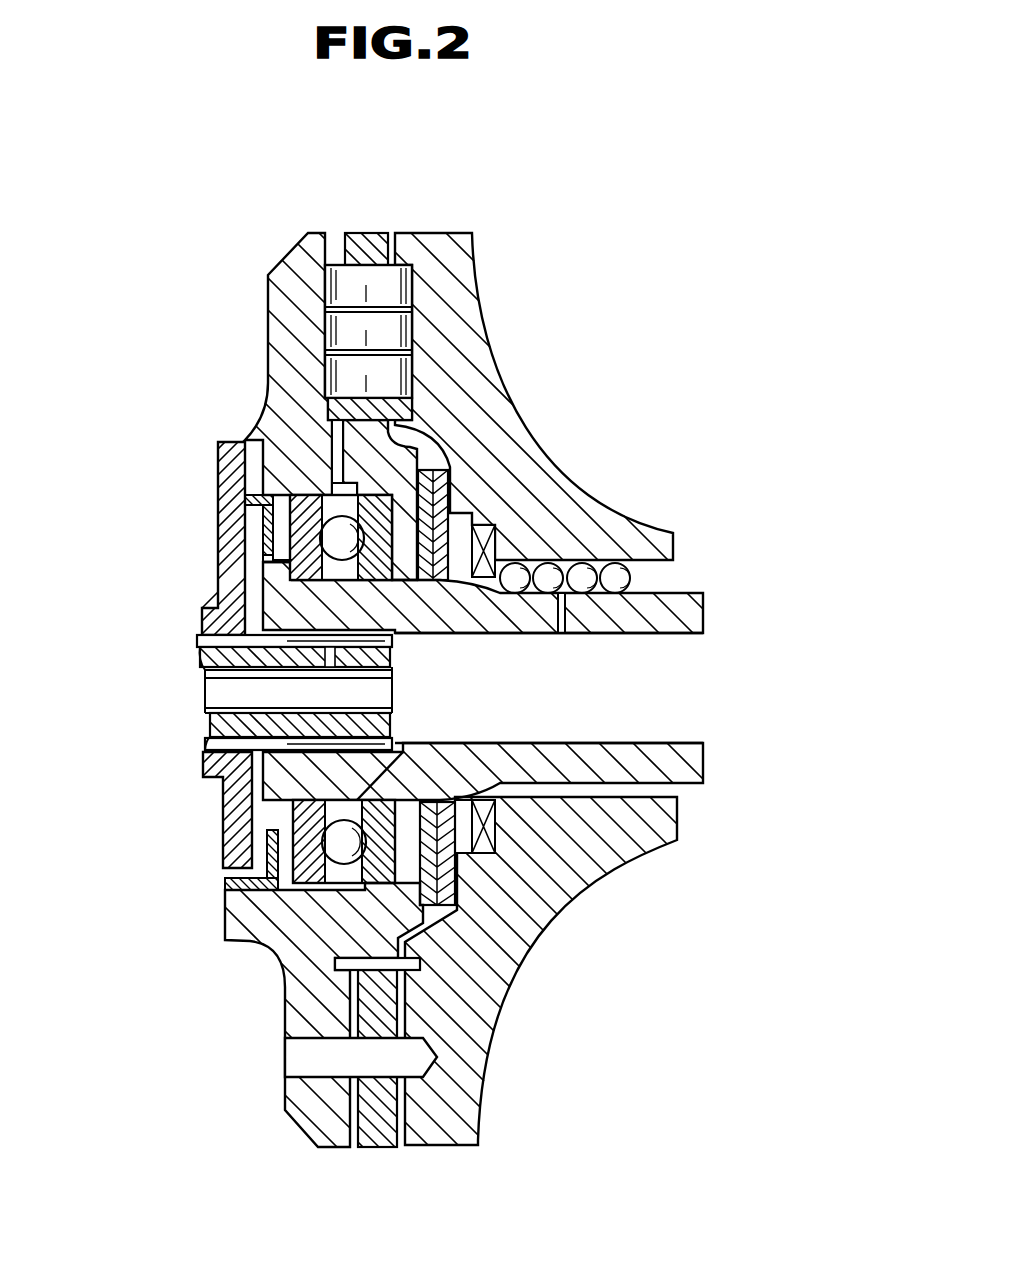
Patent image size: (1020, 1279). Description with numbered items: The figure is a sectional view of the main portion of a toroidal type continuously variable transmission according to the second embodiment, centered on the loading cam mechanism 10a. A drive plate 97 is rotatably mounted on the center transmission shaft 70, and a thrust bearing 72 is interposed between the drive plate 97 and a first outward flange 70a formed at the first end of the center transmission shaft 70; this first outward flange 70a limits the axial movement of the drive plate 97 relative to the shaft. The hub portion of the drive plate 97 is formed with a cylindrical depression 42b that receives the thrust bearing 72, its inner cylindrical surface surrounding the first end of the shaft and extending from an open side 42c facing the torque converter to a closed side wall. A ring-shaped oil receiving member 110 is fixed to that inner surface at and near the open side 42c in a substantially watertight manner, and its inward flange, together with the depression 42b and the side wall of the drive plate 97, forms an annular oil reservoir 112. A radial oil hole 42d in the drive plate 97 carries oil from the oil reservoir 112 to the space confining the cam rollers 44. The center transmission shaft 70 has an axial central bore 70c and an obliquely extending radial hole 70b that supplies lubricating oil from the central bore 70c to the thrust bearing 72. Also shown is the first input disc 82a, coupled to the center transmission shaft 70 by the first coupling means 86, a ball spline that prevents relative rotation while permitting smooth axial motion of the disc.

The loading cam mechanism 10a is at (240, 300).
The drive plate 97 is at (313, 232).
The cam rollers 44 is at (397, 290).
The first input disc 82a is at (467, 337).
The radial oil hole 42d is at (297, 493).
The cylindrical depression 42b is at (262, 430).
The open side 42c is at (245, 498).
The oil receiving member 110 is at (265, 537).
The annular oil reservoir 112 is at (273, 540).
The first outward flange 70a is at (277, 572).
The first coupling means 86 is at (622, 560).
The center transmission shaft 70 is at (705, 612).
The thrust bearing 72 is at (377, 567).
The axial central bore 70c is at (657, 692).
The radial hole 70b is at (400, 748).